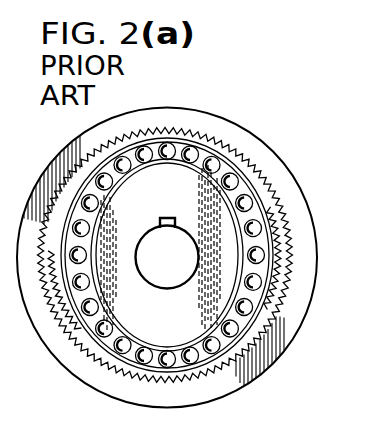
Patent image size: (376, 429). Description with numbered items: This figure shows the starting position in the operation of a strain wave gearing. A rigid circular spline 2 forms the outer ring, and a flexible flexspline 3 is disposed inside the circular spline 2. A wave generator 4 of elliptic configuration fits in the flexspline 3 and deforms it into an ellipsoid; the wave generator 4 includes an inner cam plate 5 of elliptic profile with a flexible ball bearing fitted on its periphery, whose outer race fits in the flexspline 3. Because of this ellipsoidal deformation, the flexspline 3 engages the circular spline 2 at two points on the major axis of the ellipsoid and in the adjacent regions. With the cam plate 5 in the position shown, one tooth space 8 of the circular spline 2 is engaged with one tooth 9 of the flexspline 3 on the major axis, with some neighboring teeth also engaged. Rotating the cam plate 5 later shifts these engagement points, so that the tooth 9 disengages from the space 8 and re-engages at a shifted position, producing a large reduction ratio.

The circular spline 2 is at (255, 143).
The flexspline 3 is at (268, 185).
The wave generator 4 is at (178, 328).
The cam plate 5 is at (230, 305).
The tooth space 8 is at (164, 118).
The tooth 9 is at (164, 135).